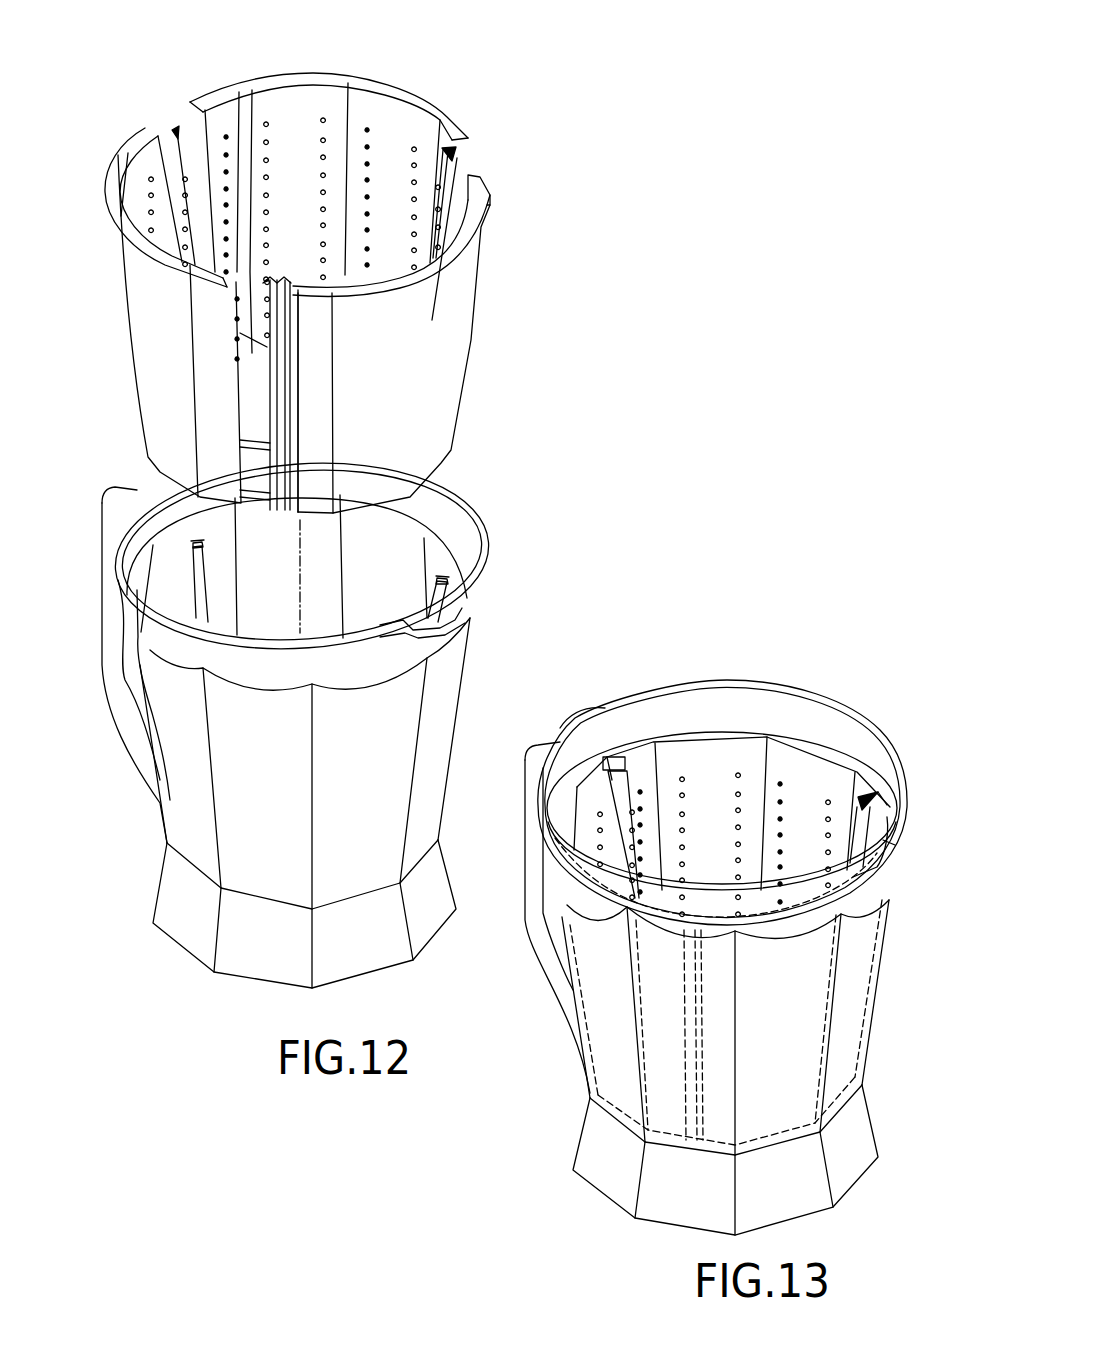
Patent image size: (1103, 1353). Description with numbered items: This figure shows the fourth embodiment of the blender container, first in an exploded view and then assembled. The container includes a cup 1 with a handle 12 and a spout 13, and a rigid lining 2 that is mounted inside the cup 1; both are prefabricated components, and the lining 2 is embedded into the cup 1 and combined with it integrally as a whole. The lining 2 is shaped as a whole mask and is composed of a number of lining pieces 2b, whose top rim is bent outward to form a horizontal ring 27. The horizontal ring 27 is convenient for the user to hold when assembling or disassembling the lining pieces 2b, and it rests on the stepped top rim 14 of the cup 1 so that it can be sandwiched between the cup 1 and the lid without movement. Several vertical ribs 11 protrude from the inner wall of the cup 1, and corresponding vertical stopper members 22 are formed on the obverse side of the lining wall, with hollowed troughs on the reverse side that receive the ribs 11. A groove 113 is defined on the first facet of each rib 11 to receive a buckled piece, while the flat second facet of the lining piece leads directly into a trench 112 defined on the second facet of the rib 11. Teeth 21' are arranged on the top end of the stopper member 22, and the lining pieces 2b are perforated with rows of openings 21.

In FIG. 12, the cup 1 is at (445, 719).
In FIG. 13, the cup 1 is at (882, 946).
In FIG. 12, the lining 2 is at (460, 112).
In FIG. 12, the lining pieces 2b is at (308, 93).
In FIG. 13, the lining pieces 2b is at (713, 747).
In FIG. 12, the vertical ribs 11 is at (202, 583).
In FIG. 12, the handle 12 is at (113, 622).
In FIG. 13, the handle 12 is at (528, 801).
In FIG. 12, the spout 13 is at (447, 617).
In FIG. 13, the spout 13 is at (870, 860).
In FIG. 12, the mug rim 14 is at (433, 517).
In FIG. 12, the filter holes 21 is at (283, 199).
In FIG. 13, the filter holes 21 is at (675, 771).
In FIG. 12, the teeth 21' is at (325, 178).
In FIG. 13, the teeth 21' is at (733, 772).
In FIG. 12, the stopper members 22 is at (170, 140).
In FIG. 13, the stopper members 22 is at (868, 805).
In FIG. 12, the horizontal ring 27 is at (115, 173).
In FIG. 13, the horizontal ring 27 is at (830, 753).
In FIG. 12, the trench 112 is at (196, 543).
In FIG. 12, the groove 113 is at (190, 546).